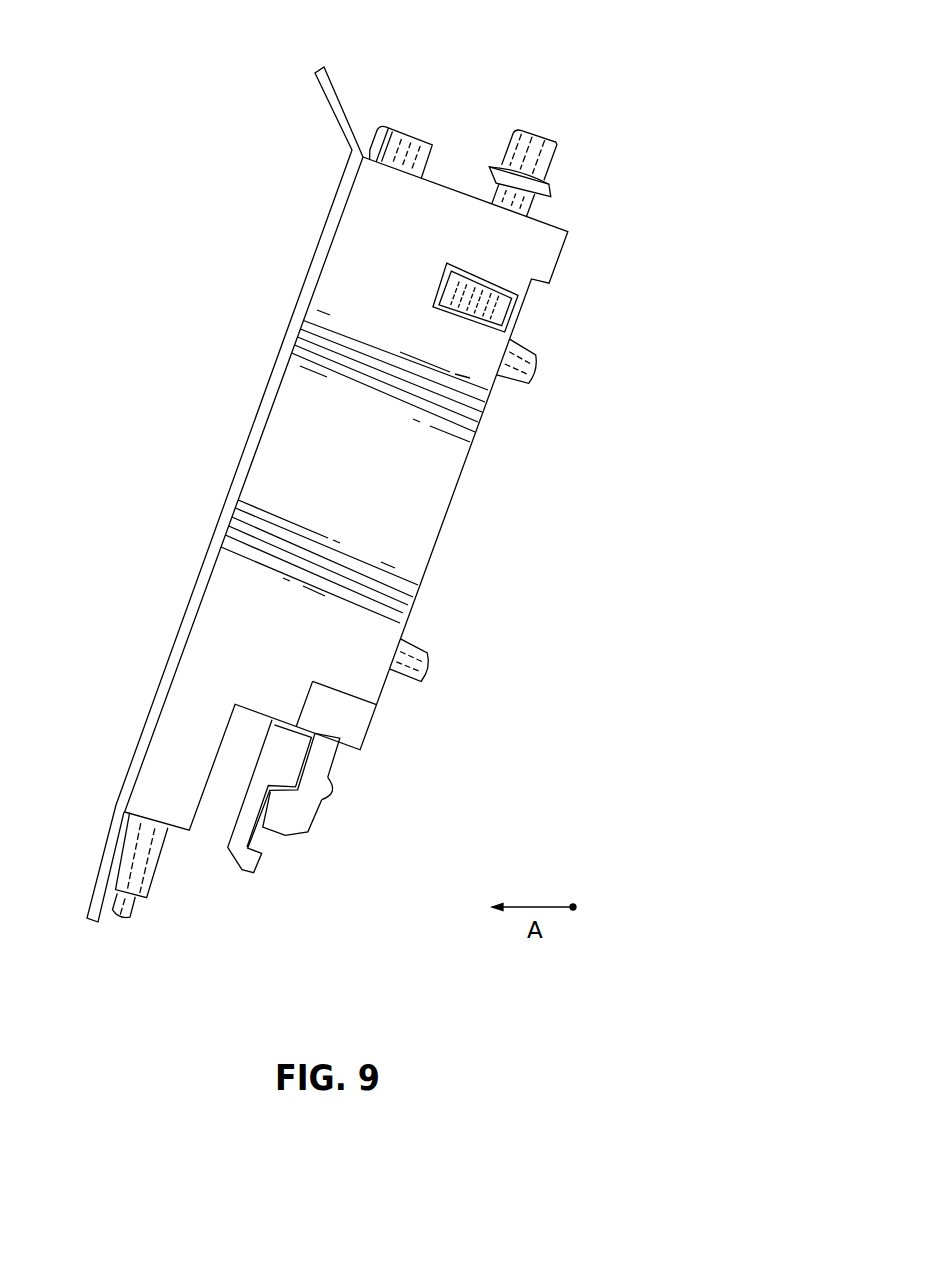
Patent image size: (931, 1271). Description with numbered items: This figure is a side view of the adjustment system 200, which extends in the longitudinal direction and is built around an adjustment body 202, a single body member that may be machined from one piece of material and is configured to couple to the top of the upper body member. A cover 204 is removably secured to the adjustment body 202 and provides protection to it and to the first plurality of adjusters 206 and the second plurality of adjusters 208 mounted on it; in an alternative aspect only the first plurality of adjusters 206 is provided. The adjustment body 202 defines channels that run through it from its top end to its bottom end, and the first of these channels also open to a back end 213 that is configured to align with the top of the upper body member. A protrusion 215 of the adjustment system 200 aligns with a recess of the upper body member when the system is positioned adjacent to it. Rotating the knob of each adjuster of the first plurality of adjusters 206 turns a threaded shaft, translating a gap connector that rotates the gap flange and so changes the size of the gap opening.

The adjustment system 200 is at (638, 121).
The adjustment body 202 is at (432, 496).
The cover 204 is at (246, 441).
The first plurality of adjusters 206 is at (547, 131).
The second plurality of adjusters 208 is at (410, 131).
The back end 213 is at (433, 568).
The protrusion 215 is at (564, 259).